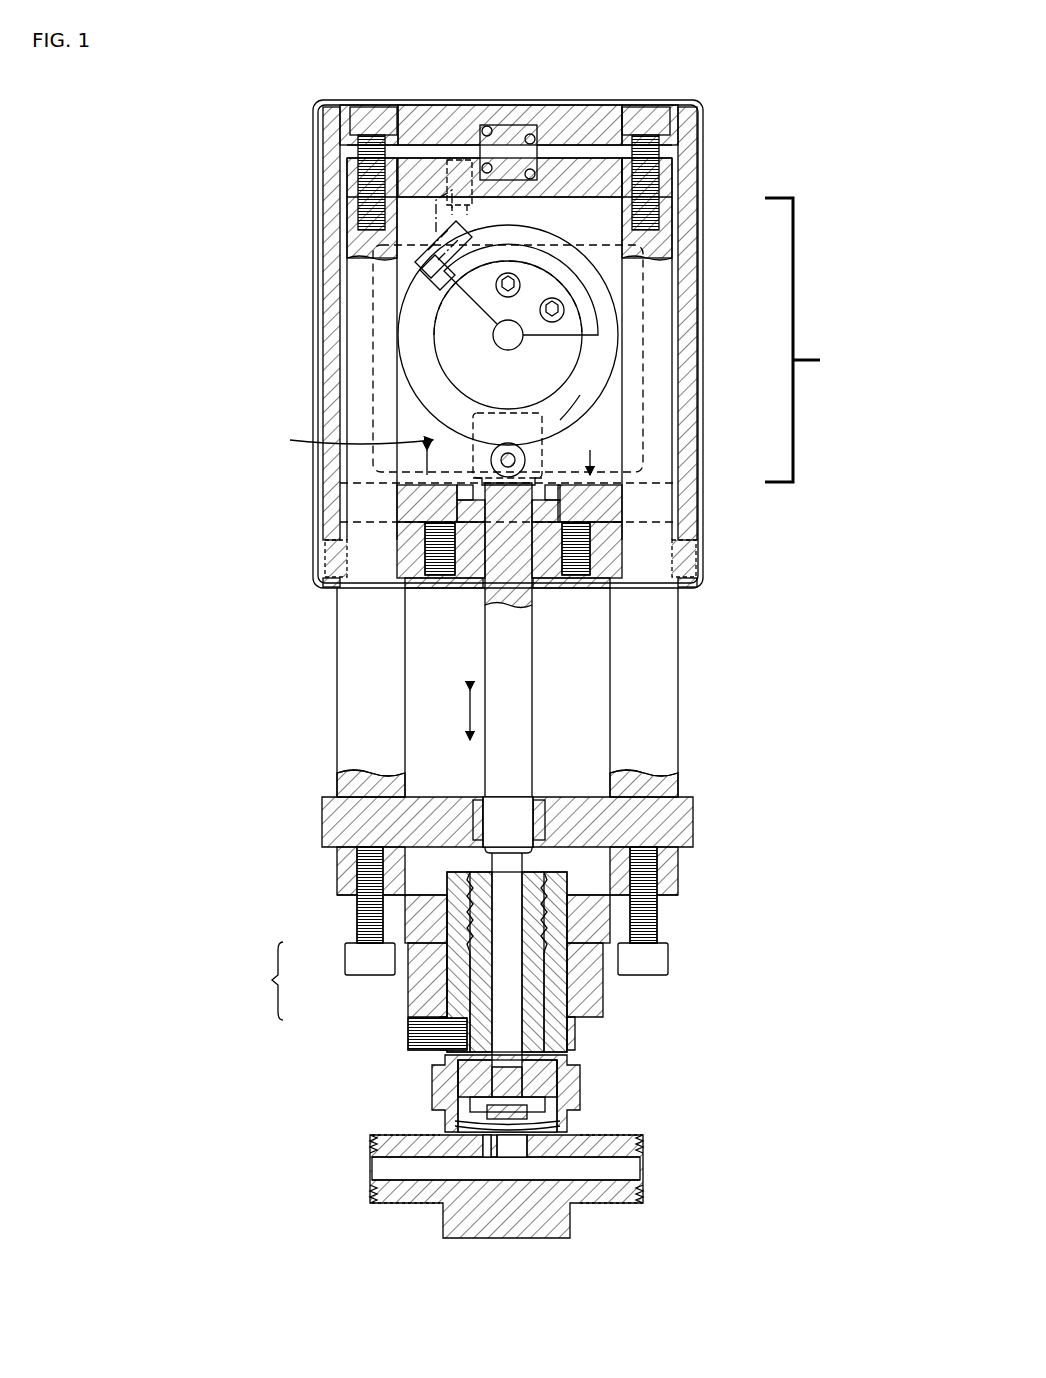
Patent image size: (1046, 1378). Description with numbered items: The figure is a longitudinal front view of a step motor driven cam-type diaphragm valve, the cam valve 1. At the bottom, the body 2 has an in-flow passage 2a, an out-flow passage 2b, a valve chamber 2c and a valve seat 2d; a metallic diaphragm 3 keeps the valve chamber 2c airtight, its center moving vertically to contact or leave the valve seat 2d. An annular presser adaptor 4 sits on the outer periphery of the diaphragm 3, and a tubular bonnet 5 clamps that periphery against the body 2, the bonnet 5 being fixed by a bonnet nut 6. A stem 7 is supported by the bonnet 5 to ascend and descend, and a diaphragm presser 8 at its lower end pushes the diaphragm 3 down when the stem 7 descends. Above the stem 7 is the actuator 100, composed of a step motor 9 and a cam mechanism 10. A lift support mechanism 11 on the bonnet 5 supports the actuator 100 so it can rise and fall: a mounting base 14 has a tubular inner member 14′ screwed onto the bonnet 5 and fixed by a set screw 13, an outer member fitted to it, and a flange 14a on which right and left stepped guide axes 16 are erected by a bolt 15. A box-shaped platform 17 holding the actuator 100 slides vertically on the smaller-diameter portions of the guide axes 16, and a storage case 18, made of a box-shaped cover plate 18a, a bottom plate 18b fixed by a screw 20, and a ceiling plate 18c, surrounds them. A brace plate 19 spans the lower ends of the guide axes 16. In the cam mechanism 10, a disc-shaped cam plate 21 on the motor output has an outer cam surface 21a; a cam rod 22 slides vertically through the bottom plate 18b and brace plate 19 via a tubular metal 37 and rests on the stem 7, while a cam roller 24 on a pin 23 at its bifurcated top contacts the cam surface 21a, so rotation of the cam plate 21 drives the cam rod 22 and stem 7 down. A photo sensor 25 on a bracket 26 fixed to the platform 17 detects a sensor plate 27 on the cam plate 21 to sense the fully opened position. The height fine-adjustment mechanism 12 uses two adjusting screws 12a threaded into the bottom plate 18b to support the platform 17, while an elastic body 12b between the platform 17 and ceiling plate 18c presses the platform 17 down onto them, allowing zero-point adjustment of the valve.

The cam valve 1 is at (777, 340).
The actuator 100 is at (816, 340).
The body 2 is at (440, 1222).
The in-flow passage 2a is at (410, 1170).
The out-flow passage 2b is at (600, 1170).
The valve chamber 2c is at (515, 1138).
The valve seat 2d is at (488, 1138).
The metallic diaphragm 3 is at (490, 1130).
The presser adaptor 4 is at (540, 1126).
The bonnet 5 is at (540, 980).
The bonnet nut 6 is at (575, 1080).
The stem 7 is at (508, 1030).
The diaphragm presser 8 is at (500, 1112).
The step motor 9 is at (380, 345).
The cam mechanism 10 is at (426, 451).
The lift support mechanism 11 is at (333, 728).
The height fine-adjustment mechanism 12 is at (575, 580).
The adjusting screw 12a is at (437, 582).
The elastic body 12b is at (487, 128).
The set screw 13 is at (420, 1032).
The mounting base 14 is at (265, 981).
The inner member 14′ is at (455, 980).
The flange 14a is at (668, 920).
The bolt 15 is at (504, 911).
The guide axis 16 is at (655, 395).
The platform 17 is at (596, 185).
The storage case 18 is at (312, 205).
The cover plate 18a is at (700, 240).
The bottom plate 18b is at (468, 582).
The ceiling plate 18c is at (592, 130).
The brace plate 19 is at (560, 815).
The screw 20 is at (335, 550).
The cam plate 21 is at (430, 385).
The cam surface 21a is at (598, 410).
The cam rod 22 is at (510, 708).
The pin 23 is at (492, 458).
The cam roller 24 is at (526, 458).
The photo sensor 25 is at (410, 290).
The bracket 26 is at (420, 240).
The sensor plate 27 is at (533, 268).
The tubular metal 37 is at (560, 498).